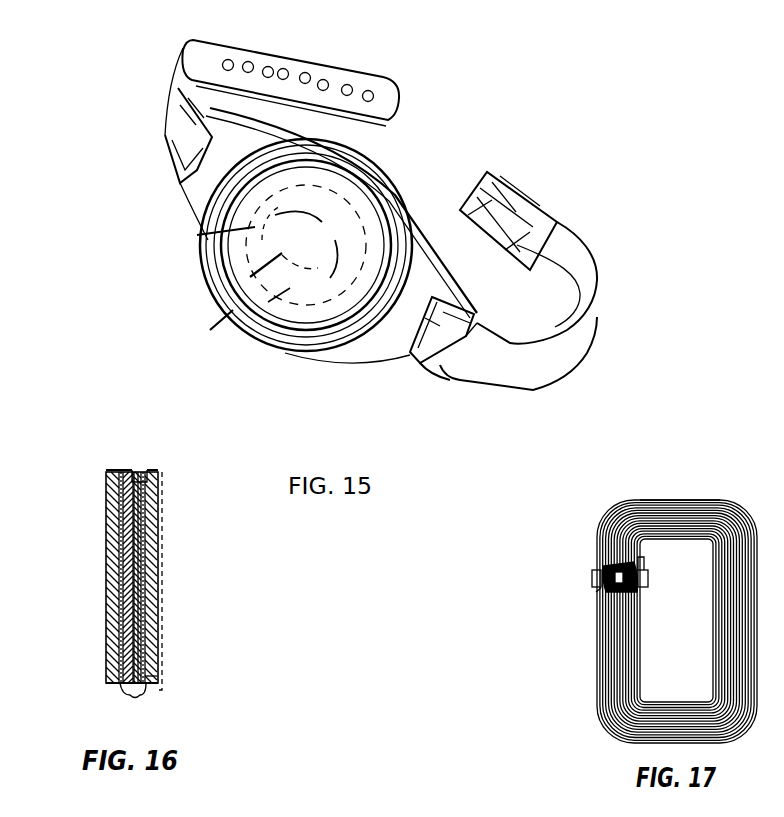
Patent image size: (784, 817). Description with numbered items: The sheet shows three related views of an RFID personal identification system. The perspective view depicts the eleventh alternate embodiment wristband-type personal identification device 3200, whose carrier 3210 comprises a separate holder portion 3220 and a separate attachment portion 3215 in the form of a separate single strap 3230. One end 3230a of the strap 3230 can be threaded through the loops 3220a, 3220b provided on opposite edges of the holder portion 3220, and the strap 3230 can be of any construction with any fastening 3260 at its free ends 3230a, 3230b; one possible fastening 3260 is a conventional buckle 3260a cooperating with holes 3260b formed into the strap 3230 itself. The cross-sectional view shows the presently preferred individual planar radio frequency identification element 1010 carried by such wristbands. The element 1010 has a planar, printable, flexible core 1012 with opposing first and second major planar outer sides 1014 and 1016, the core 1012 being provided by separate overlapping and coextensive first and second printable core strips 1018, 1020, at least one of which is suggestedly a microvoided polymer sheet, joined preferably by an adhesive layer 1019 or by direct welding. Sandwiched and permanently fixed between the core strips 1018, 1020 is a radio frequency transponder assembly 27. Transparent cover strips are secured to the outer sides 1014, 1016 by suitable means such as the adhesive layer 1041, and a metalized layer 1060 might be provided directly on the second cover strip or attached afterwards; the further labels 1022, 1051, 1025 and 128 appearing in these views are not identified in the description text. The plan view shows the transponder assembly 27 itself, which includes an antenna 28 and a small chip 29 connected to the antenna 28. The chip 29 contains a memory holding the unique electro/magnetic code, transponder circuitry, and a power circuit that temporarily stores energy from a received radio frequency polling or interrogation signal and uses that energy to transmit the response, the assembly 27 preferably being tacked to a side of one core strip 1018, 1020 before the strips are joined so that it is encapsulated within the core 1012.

In FIG. 15, the RFID wristband personal identification device 3200 is at (626, 138).
In FIG. 15, the carrier 3210 is at (690, 339).
In FIG. 15, the attachment portion 3215 is at (587, 258).
In FIG. 15, the holder portion 3220 is at (203, 279).
In FIG. 15, the loop 3220a is at (413, 357).
In FIG. 15, the loop 3220b is at (178, 178).
In FIG. 15, the strap 3230 is at (488, 353).
In FIG. 15, the strap end 3230a is at (402, 87).
In FIG. 15, the strap free end 3230b is at (518, 227).
In FIG. 15, the fastening 3260 is at (415, 118).
In FIG. 15, the buckle 3260a is at (467, 190).
In FIG. 15, the holes 3260b is at (288, 68).
In FIG. 15, the display bezel 1022 is at (205, 236).
In FIG. 15, the radio frequency identification element 1010 is at (218, 371).
In FIG. 16, the radio frequency identification element 1010 is at (82, 521).
In FIG. 15, the radio frequency transponder assembly 27 is at (265, 302).
In FIG. 16, the radio frequency transponder assembly 27 is at (132, 529).
In FIG. 17, the radio frequency transponder assembly 27 is at (651, 496).
In FIG. 17, the antenna 28 is at (678, 499).
In FIG. 17, the chip 29 is at (596, 592).
In FIG. 16, the adhesive layer 1041 is at (118, 471).
In FIG. 16, the top layer edge 1051 is at (150, 471).
In FIG. 16, the metalized layer 1060 is at (166, 555).
In FIG. 16, the intermediate layer 1025 is at (140, 612).
In FIG. 16, the first major planar outer side 1014 is at (147, 632).
In FIG. 16, the thin layer 128 is at (150, 655).
In FIG. 16, the second major planar outer side 1016 is at (112, 650).
In FIG. 16, the first printable core strip 1018 is at (110, 672).
In FIG. 16, the adhesive layer 1019 is at (130, 680).
In FIG. 16, the second printable core strip 1020 is at (150, 683).
In FIG. 16, the core 1012 is at (135, 698).